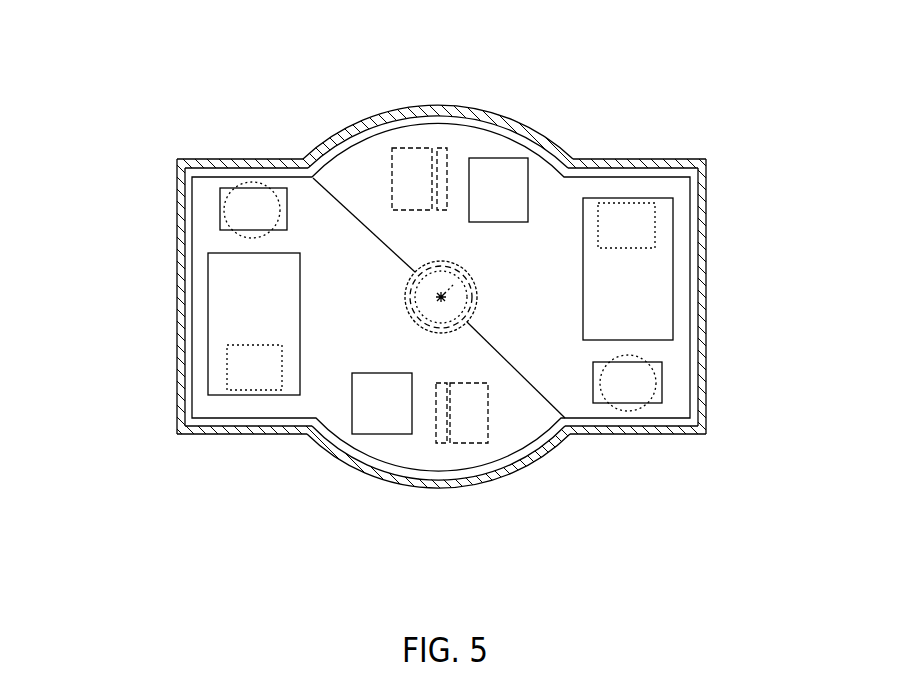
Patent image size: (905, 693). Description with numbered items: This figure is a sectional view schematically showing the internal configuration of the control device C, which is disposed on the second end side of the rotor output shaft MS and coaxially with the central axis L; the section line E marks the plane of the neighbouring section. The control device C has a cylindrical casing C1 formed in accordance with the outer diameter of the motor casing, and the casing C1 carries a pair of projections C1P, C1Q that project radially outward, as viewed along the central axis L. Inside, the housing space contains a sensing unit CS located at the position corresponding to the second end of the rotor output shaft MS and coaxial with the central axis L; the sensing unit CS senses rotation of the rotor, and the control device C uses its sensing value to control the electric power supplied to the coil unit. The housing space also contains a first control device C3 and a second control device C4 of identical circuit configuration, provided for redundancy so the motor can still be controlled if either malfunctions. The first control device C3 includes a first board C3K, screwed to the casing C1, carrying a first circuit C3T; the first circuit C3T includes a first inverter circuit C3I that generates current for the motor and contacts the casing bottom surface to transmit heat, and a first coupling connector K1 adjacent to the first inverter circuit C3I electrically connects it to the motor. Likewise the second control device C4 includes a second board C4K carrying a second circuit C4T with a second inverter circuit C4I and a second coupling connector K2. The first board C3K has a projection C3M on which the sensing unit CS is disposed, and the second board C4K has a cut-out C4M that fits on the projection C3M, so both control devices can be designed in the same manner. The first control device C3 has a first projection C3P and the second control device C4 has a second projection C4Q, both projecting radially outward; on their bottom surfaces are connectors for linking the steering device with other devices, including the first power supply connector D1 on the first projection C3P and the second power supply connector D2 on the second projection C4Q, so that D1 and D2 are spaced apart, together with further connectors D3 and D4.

The control device C is at (714, 103).
The casing C1 is at (425, 490).
The projection C1P is at (672, 442).
The projection C1Q is at (221, 442).
The first control device C3 is at (632, 158).
The first projection C3P is at (695, 332).
The first board C3K is at (457, 152).
The first inverter circuit C3I is at (415, 147).
The first circuit C3T is at (628, 190).
The projection C3M is at (400, 280).
The second control device C4 is at (252, 158).
The second board C4K is at (203, 183).
The second projection C4Q is at (184, 344).
The second circuit C4T is at (256, 373).
The cut-out C4M is at (427, 268).
The second inverter circuit C4I is at (488, 445).
The sensing unit CS is at (472, 307).
The first coupling connector K1 is at (495, 157).
The second coupling connector K2 is at (440, 445).
The first power supply connector D1 is at (662, 380).
The second power supply connector D2 is at (222, 232).
The connector D3 is at (656, 222).
The connector D4 is at (227, 380).
The rotor output shaft MS is at (407, 318).
The central axis L is at (447, 292).
The section line E is at (75, 297).